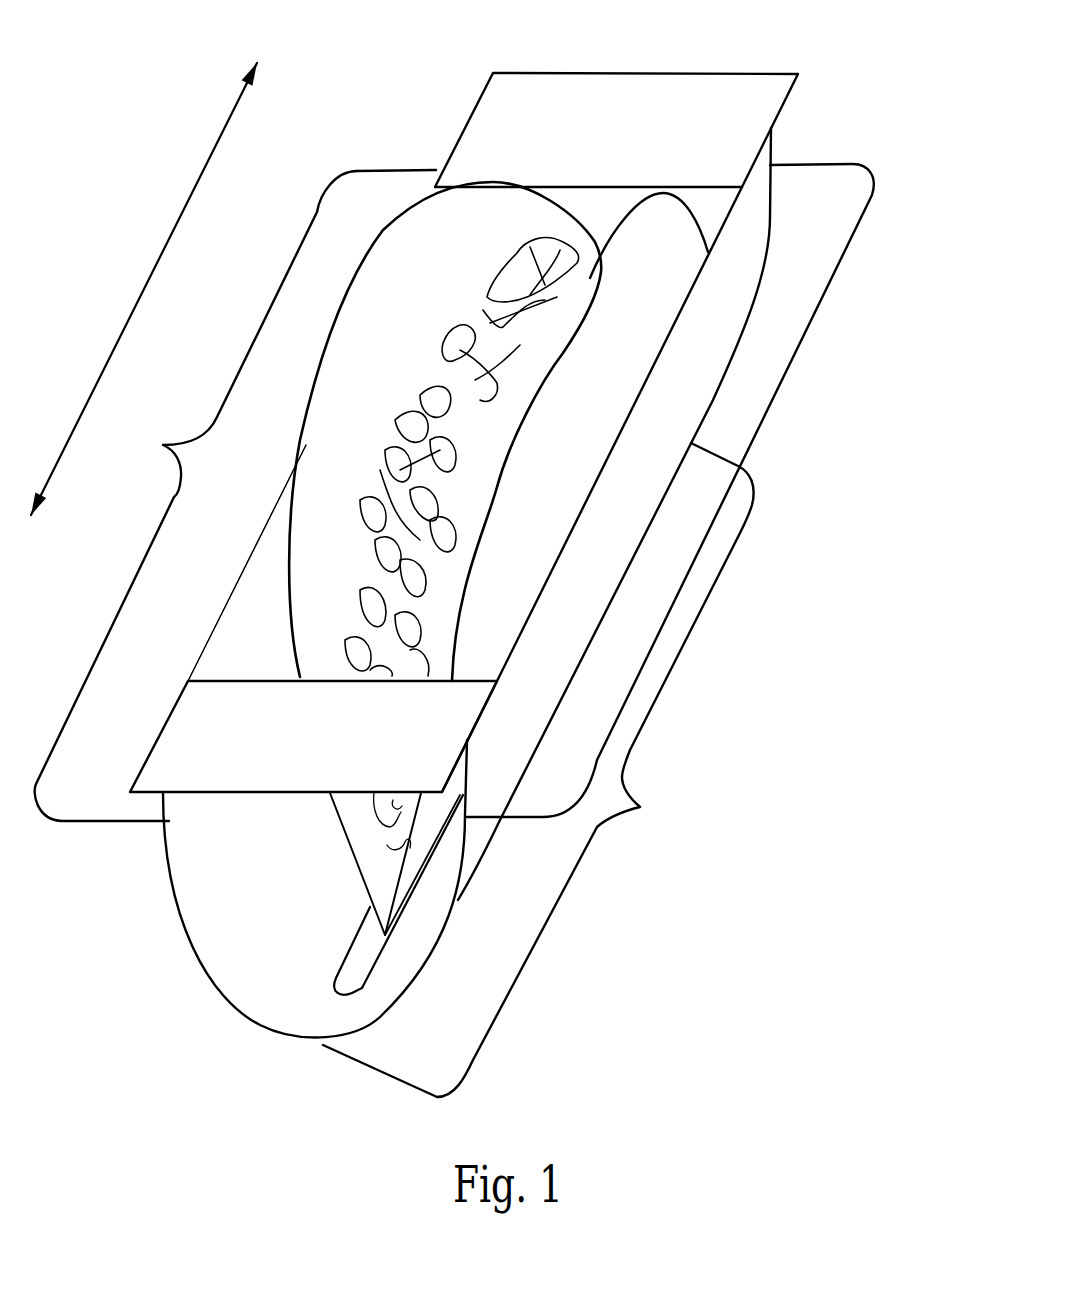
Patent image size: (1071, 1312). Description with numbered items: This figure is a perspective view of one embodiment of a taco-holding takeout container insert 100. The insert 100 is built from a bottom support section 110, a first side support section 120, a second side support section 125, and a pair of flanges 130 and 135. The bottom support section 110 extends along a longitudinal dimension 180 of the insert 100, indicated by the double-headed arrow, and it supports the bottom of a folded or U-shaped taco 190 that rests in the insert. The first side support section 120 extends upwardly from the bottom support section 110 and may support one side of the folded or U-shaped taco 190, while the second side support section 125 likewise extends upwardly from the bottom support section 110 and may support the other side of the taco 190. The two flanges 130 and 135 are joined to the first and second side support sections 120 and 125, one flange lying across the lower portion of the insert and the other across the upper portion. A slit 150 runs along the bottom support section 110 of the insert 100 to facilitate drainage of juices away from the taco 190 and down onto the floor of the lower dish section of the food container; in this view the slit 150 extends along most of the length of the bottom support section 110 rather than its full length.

The taco-holding takeout container insert 100 is at (803, 673).
The bottom support section 110 is at (454, 630).
The first side support section 120 is at (755, 433).
The second side support section 125 is at (265, 576).
The flange 130 is at (218, 712).
The flange 135 is at (745, 95).
The slit 150 is at (352, 977).
The longitudinal dimension 180 is at (144, 279).
The folded or U-shaped taco 190 is at (374, 230).